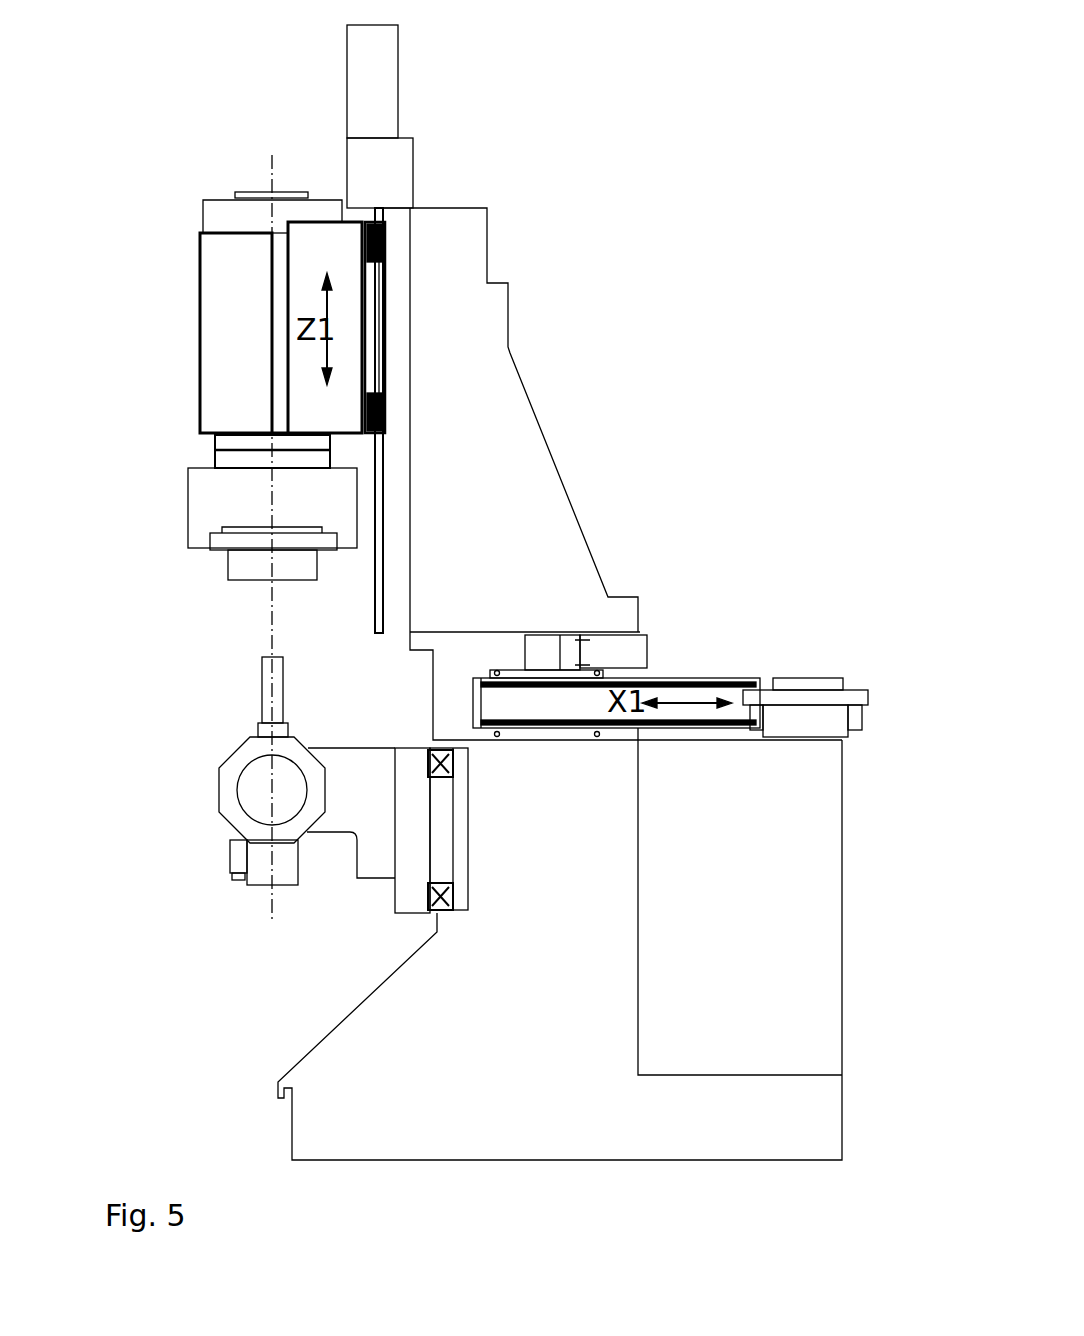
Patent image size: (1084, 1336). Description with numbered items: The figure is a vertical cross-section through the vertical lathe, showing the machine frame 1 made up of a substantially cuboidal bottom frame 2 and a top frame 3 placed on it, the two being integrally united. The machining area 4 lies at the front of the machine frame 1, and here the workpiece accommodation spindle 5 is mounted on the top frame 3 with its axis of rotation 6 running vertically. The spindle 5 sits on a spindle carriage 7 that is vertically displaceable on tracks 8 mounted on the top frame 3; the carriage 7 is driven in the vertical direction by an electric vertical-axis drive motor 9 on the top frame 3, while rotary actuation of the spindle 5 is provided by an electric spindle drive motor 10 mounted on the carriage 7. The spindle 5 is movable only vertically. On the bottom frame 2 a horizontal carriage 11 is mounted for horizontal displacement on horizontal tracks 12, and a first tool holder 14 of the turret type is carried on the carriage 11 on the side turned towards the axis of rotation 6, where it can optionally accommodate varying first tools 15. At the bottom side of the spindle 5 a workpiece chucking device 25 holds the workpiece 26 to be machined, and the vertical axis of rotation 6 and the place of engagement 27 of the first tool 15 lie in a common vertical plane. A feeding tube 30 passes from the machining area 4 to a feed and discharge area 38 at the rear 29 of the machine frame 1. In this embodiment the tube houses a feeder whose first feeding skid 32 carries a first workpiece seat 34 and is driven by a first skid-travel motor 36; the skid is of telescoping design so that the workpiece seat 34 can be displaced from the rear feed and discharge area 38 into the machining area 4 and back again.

The machine frame 1 is at (634, 364).
The bottom frame 2 is at (628, 850).
The top frame 3 is at (502, 372).
The machining area 4 is at (236, 611).
The workpiece accommodation spindle 5 is at (222, 455).
The axis of rotation 6 is at (267, 175).
The spindle carriage 7 is at (353, 282).
The tracks 8 is at (380, 327).
The Z1 drive motor 9 is at (388, 88).
The spindle drive motor 10 is at (213, 218).
The X1 carriage 11 is at (340, 822).
The horizontal tracks 12 is at (433, 763).
The first tool holder 14 is at (225, 790).
The first tools 15 is at (268, 684).
The workpiece chucking device 25 is at (205, 498).
The workpiece 26 is at (230, 567).
The place of engagement 27 is at (268, 655).
The rear 29 is at (772, 590).
The feeding tube 30 is at (497, 645).
The first feeding skid 32 is at (740, 680).
The first workpiece seat 34 is at (867, 707).
The first skid-travel motor 36 is at (637, 652).
The feed and discharge area 38 is at (808, 665).